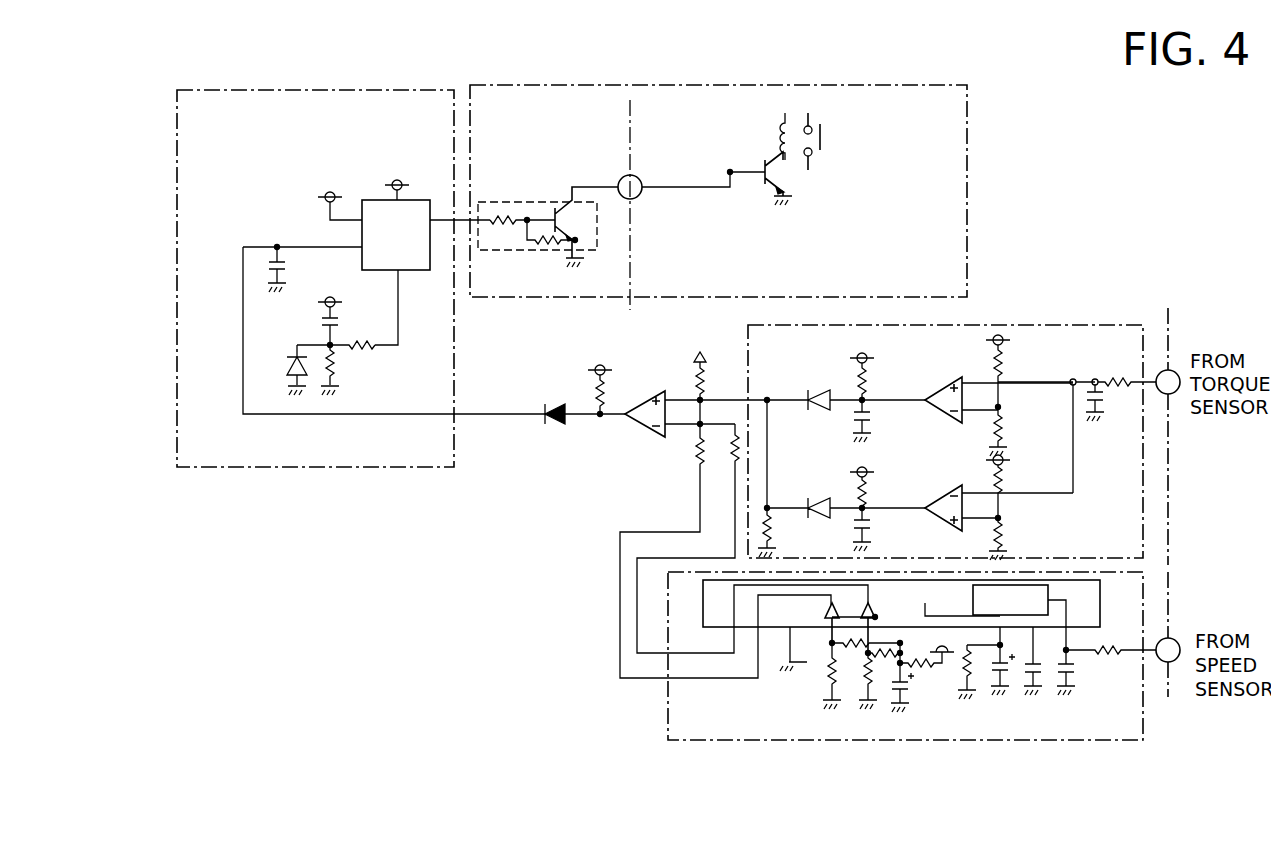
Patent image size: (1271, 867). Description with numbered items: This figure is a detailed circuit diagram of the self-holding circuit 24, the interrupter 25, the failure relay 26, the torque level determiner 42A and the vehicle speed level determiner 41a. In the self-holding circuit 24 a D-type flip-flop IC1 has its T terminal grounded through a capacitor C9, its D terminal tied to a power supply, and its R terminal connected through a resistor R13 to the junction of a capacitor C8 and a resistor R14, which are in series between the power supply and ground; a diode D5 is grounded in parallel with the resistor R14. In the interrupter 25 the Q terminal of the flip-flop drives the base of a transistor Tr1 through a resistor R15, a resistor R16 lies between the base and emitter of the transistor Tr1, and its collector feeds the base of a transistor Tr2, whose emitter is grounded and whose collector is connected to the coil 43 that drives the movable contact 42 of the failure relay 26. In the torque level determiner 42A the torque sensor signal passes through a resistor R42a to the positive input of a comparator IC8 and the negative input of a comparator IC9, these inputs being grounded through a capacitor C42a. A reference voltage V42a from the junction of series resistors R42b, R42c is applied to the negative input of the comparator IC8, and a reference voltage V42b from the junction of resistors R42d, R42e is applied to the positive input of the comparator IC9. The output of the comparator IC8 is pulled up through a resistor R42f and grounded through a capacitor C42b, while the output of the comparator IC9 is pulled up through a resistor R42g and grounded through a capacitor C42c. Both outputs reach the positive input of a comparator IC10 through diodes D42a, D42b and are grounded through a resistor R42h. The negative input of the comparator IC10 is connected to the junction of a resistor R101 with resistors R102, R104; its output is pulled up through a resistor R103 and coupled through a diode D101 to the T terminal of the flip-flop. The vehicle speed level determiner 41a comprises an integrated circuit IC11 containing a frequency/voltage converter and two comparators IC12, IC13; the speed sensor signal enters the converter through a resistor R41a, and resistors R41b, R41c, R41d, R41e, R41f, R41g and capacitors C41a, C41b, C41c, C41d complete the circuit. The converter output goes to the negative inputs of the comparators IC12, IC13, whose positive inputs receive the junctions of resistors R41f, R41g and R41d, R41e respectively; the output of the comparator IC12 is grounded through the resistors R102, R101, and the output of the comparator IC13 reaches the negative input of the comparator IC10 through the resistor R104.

The self-holding circuit 24 is at (272, 90).
The interrupter 25 is at (560, 118).
The failure relay 26 is at (828, 100).
The movable contact 42 is at (822, 141).
The coil 43 is at (778, 144).
The torque level determiner 42A is at (1048, 324).
The vehicle speed level determiner 41a is at (768, 742).
The transistor Tr1 is at (582, 223).
The transistor Tr2 is at (782, 179).
The resistor R15 is at (502, 210).
The resistor R16 is at (548, 244).
The capacitor C9 is at (294, 265).
The capacitor C8 is at (338, 320).
The flip-flop IC IC1 is at (394, 297).
The diode D5 is at (279, 370).
The resistor R13 is at (358, 350).
The resistor R14 is at (342, 367).
The diode D101 is at (549, 404).
The resistor R103 is at (610, 384).
The resistor R101 is at (706, 378).
The comparator IC10 is at (645, 428).
The resistor R102 is at (698, 452).
The resistor R104 is at (730, 455).
The comparator IC13 is at (868, 603).
The comparator IC12 is at (832, 603).
The diode D42a is at (813, 390).
The diode D42b is at (813, 498).
The resistor R42f is at (875, 384).
The resistor R42g is at (858, 489).
The resistor R42h is at (793, 532).
The capacitor C42b is at (874, 420).
The capacitor C42c is at (874, 531).
The comparator IC8 is at (932, 412).
The comparator IC9 is at (932, 498).
The resistor R42a is at (1113, 380).
The resistor R42b is at (1021, 371).
The resistor R42c is at (1022, 431).
The resistor R42d is at (1021, 486).
The resistor R42e is at (1023, 539).
The reference voltage V42a is at (1000, 409).
The reference voltage V42b is at (1000, 520).
The capacitor C42a is at (1106, 400).
The integrated circuit IC11 is at (1100, 600).
The resistor R41a is at (1108, 642).
The resistor R41b is at (1008, 676).
The resistor R41c is at (974, 678).
The resistor R41d is at (872, 642).
The resistor R41e is at (860, 673).
The resistor R41f is at (828, 682).
The resistor R41g is at (870, 658).
The capacitor C41a is at (1075, 668).
The capacitor C41b is at (1039, 678).
The capacitor C41c is at (962, 614).
The capacitor C41d is at (908, 693).